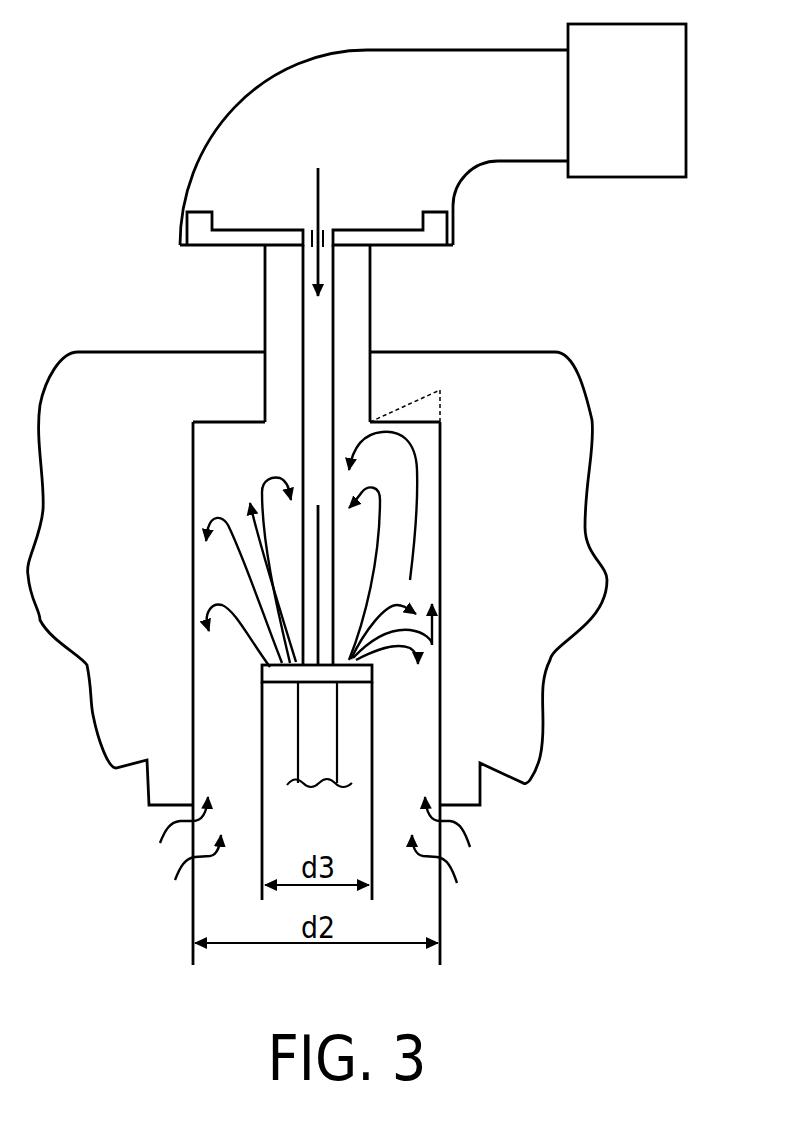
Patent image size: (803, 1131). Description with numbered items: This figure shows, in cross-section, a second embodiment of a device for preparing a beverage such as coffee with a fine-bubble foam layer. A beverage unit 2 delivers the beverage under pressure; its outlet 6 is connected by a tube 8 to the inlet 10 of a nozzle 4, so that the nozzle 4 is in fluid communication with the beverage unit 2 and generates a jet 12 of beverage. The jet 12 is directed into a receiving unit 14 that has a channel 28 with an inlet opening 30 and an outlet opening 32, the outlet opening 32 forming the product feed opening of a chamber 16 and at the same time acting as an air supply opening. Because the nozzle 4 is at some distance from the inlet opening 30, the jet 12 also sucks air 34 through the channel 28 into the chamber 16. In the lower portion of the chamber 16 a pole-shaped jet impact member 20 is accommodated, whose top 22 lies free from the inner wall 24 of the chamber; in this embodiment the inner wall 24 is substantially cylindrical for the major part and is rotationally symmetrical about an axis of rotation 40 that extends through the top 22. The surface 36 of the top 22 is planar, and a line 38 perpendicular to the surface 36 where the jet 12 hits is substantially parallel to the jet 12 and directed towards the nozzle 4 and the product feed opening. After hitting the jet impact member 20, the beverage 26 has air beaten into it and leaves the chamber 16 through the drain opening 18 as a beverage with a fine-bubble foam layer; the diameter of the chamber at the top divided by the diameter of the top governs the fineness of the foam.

The beverage unit 2 is at (686, 100).
The nozzle 4 is at (326, 235).
The outlet 6 is at (570, 100).
The tube 8 is at (237, 100).
The inlet 10 is at (312, 235).
The jet 12 is at (310, 308).
The receiving unit 14 is at (372, 380).
The chamber 16 is at (209, 468).
The drain opening 18 is at (318, 800).
The jet impact member 20 is at (303, 763).
The top 22 is at (292, 673).
The inner wall 24 is at (207, 425).
The beverage 26 is at (233, 548).
The channel 28 is at (263, 385).
The inlet opening 30 is at (275, 353).
The outlet opening 32 is at (292, 395).
The air 34 is at (317, 840).
The surface 36 is at (347, 683).
The perpendicular line 38 is at (322, 553).
The axis of rotation 40 is at (328, 508).